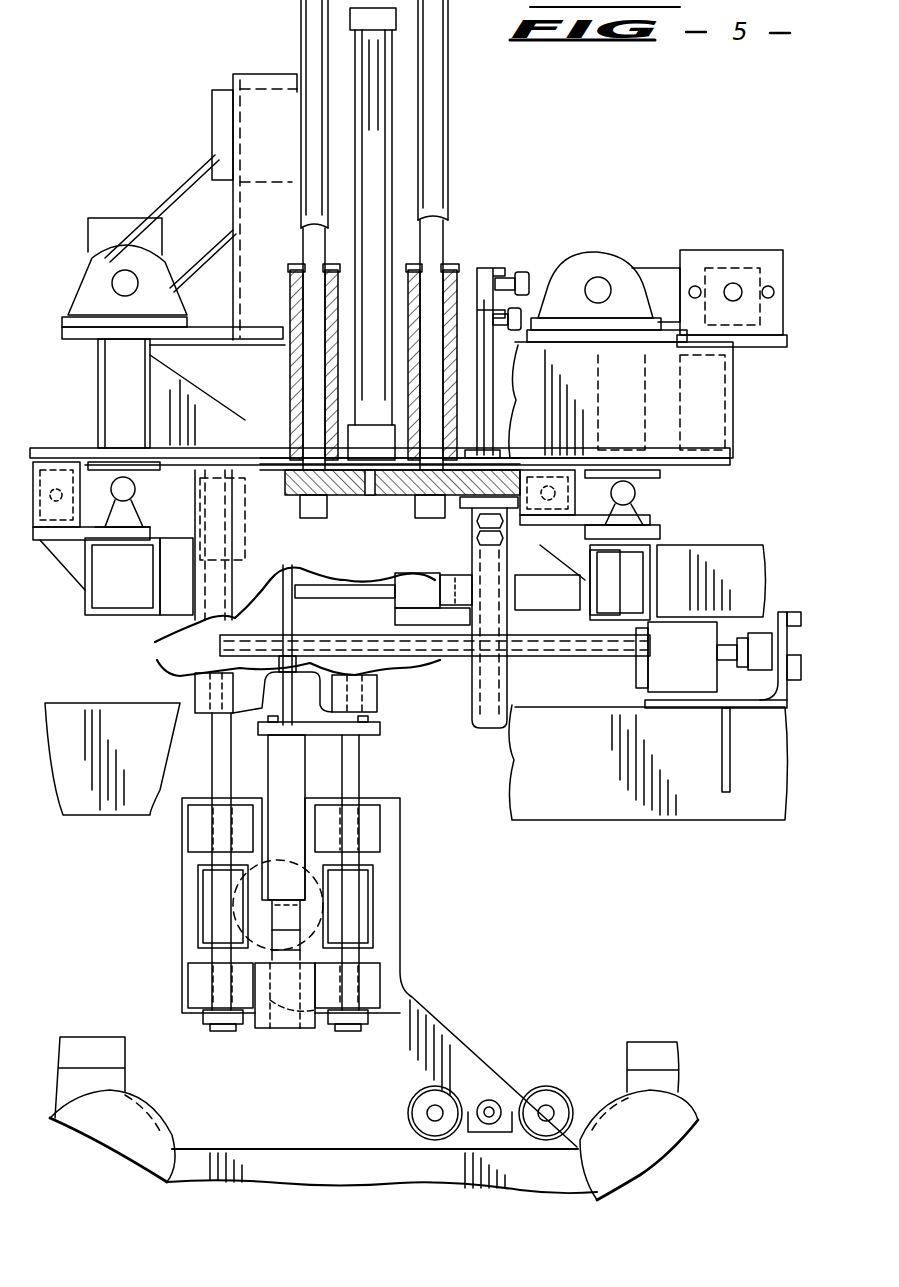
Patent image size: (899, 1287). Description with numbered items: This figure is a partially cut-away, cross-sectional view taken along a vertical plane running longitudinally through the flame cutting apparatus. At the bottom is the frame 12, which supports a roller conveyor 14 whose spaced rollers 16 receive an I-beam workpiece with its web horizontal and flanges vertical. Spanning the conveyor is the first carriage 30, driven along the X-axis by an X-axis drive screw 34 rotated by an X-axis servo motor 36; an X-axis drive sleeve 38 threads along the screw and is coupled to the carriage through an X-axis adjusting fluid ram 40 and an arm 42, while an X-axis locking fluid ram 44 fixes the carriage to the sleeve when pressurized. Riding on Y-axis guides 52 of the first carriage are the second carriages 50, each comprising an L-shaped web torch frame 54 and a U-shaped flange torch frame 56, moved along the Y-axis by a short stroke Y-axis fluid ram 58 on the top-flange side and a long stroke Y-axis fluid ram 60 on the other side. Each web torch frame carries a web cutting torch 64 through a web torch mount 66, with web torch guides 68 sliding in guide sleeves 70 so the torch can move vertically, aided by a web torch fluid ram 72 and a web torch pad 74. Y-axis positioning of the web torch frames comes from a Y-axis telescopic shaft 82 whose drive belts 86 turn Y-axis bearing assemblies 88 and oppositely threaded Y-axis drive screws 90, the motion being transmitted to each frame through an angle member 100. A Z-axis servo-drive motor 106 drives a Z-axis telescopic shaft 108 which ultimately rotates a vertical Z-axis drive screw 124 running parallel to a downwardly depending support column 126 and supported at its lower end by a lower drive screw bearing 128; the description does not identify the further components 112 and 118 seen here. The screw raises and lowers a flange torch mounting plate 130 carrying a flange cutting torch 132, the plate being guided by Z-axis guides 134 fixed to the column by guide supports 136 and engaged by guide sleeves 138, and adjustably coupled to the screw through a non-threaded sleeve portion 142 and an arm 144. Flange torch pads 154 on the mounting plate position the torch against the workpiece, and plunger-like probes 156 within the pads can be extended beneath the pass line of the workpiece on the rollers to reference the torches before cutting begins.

The frame 12 is at (688, 825).
The roller conveyor 14 is at (650, 1042).
The rollers 16 is at (168, 1150).
The first carriage 30 is at (694, 545).
The X-axis drive screw 34 is at (613, 655).
The X-axis servo motor 36 is at (797, 612).
The X-axis drive sleeve 38 is at (345, 612).
The X-axis adjusting fluid ram 40 is at (458, 572).
The arm 42 is at (290, 612).
The X-axis locking fluid ram 44 is at (510, 558).
The second carriages 50 is at (738, 445).
The Y-axis guides 52 is at (135, 489).
The web torch frame 54 is at (733, 398).
The flange torch frame 56 is at (98, 385).
The short stroke Y-axis fluid ram 58 is at (478, 525).
The long stroke Y-axis fluid ram 60 is at (40, 540).
The web cutting torches 64 is at (490, 425).
The web torch mount 66 is at (288, 486).
The web torch guides 68 is at (316, 190).
The guide sleeves 70 is at (290, 296).
The web torch fluid ram 72 is at (382, 98).
The web torch pad 74 is at (472, 703).
The Y-axis telescopic shaft 82 is at (598, 277).
The drive belts 86 is at (655, 268).
The Y-axis bearing assemblies 88 is at (733, 266).
The Y-axis drive screws 90 is at (733, 300).
The angle member 100 is at (770, 268).
The Z-axis servo-drive motor 106 is at (105, 228).
The Z-axis telescopic shaft 108 is at (125, 283).
The brace 112 is at (188, 185).
The housing 118 is at (276, 78).
The Z-axis drive screw 124 is at (283, 692).
The support column 126 is at (286, 622).
The lower drive screw bearing 128 is at (268, 1030).
The flange torch mounting plate 130 is at (400, 900).
The flange cutting torch 132 is at (489, 1100).
The Z-axis guides 134 is at (212, 762).
The guide supports 136 is at (248, 548).
The guide sleeves 138 is at (200, 830).
The non-threaded sleeve portion 142 is at (290, 770).
The arm 144 is at (375, 733).
The flange torch pads 154 is at (418, 1100).
The probes 156 is at (430, 1112).